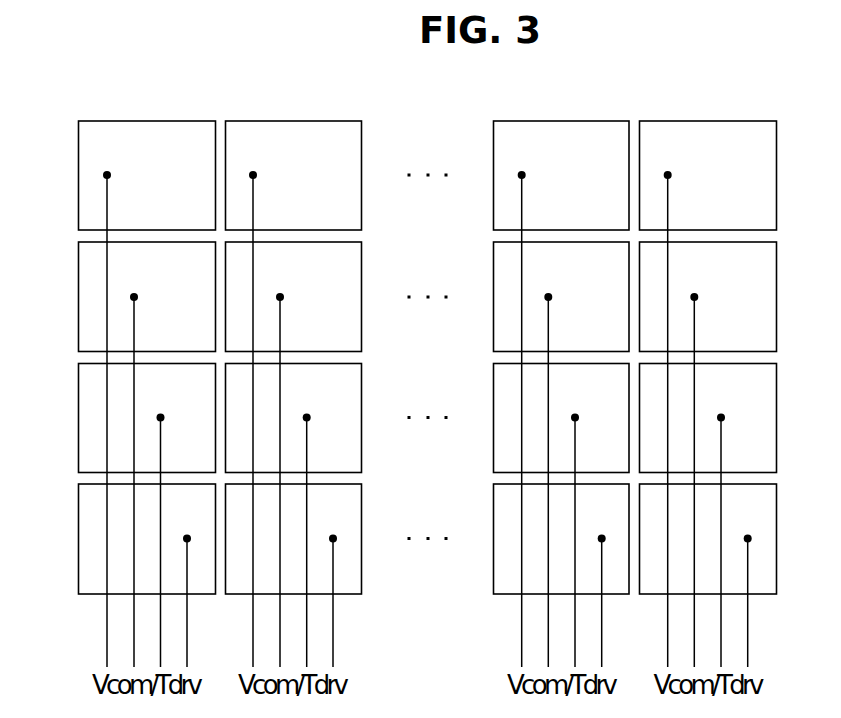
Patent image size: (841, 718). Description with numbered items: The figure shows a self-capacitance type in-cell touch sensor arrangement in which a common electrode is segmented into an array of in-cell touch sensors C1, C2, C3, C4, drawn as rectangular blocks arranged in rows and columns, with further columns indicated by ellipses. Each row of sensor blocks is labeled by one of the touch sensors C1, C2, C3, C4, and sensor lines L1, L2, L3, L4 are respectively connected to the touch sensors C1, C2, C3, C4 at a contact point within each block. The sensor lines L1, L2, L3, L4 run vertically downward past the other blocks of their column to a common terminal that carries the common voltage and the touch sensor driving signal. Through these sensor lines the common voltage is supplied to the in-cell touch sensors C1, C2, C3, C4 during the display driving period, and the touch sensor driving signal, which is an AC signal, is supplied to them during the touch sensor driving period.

The in-cell touch sensor C1 is at (133, 158).
The in-cell touch sensor C2 is at (133, 280).
The in-cell touch sensor C3 is at (175, 401).
The in-cell touch sensor C4 is at (175, 522).
The sensor line L1 is at (107, 207).
The sensor line L2 is at (134, 328).
The sensor line L3 is at (160, 450).
The sensor line L4 is at (187, 570).